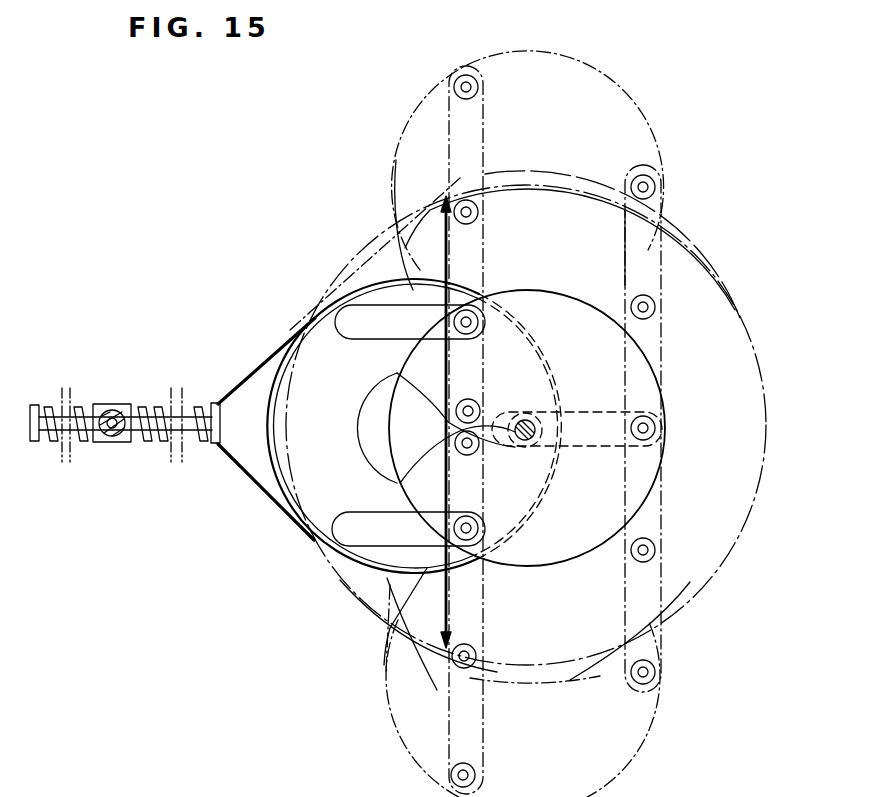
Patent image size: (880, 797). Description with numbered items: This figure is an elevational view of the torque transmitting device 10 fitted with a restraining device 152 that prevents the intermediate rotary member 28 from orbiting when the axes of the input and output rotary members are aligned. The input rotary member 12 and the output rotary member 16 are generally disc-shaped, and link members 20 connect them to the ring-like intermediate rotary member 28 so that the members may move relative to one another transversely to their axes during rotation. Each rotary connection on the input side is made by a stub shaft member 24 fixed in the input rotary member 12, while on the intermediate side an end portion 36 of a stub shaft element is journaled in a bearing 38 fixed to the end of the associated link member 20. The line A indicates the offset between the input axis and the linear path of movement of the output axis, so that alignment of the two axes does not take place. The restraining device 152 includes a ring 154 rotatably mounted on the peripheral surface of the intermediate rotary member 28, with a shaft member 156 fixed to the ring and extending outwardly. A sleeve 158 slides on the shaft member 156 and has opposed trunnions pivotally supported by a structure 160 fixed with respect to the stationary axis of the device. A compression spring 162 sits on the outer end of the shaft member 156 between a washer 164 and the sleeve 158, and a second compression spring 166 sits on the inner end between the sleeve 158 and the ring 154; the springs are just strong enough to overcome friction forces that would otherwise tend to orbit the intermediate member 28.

The torque transmitting device 10 is at (630, 400).
The input rotary member 12 is at (645, 458).
The output rotary member 16 is at (630, 110).
The link members 20 is at (388, 429).
The stub shaft member 24 is at (480, 325).
The intermediate rotary member 28 is at (655, 232).
The end portion of stub shaft element 36 is at (350, 318).
The bearing 38 is at (373, 493).
The restraining device 152 is at (306, 318).
The ring 154 is at (287, 355).
The shaft member 156 is at (137, 406).
The sleeve 158 is at (112, 444).
The structure 160 is at (112, 408).
The compression spring 162 is at (53, 400).
The washer 164 is at (37, 440).
The second compression spring 166 is at (190, 442).
The line A is at (446, 262).